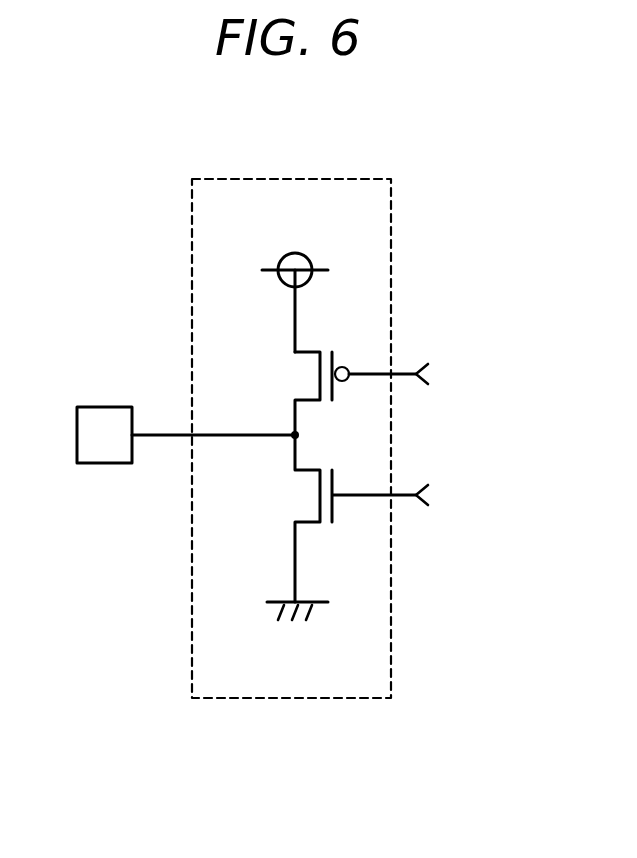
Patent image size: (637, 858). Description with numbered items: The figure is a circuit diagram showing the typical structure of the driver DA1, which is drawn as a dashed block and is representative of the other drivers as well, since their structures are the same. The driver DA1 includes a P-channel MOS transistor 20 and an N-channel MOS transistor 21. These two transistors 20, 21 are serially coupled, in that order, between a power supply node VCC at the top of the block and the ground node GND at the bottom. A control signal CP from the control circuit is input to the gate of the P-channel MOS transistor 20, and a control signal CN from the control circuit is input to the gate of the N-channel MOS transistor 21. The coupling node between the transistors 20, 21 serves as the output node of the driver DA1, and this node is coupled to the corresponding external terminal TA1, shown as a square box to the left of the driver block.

The P-channel MOS transistor 20 is at (302, 375).
The N-channel MOS transistor 21 is at (303, 496).
The driver DA1 is at (317, 173).
The external terminal TA1 is at (107, 405).
The power supply node VCC is at (295, 287).
The ground node GND is at (297, 627).
The control signal CP is at (405, 376).
The control signal CN is at (399, 497).